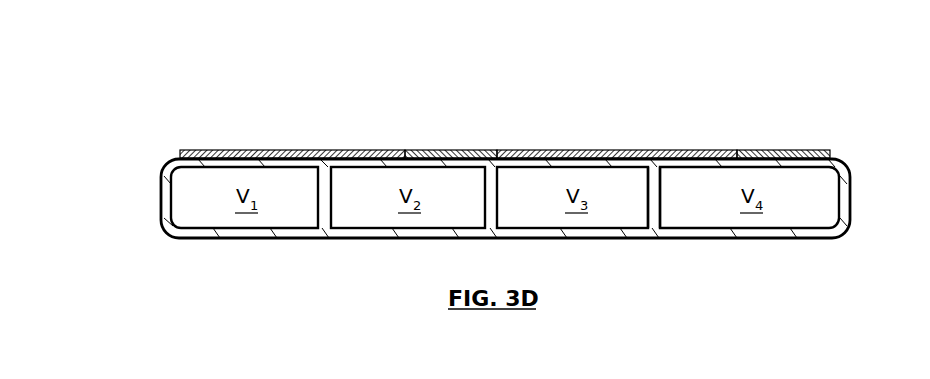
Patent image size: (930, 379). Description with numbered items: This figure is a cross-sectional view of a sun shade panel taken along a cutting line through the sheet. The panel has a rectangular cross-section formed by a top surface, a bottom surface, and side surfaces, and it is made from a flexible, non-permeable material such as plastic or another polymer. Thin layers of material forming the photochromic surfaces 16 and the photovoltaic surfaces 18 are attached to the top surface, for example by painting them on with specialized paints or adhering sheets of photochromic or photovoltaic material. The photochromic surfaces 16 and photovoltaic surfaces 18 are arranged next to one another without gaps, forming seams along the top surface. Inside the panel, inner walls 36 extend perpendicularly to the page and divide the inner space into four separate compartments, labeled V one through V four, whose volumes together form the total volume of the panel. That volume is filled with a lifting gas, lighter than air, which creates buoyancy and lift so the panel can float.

The photochromic surface 16 is at (463, 149).
The photovoltaic surface 18 is at (325, 150).
The inner wall 36 is at (654, 200).